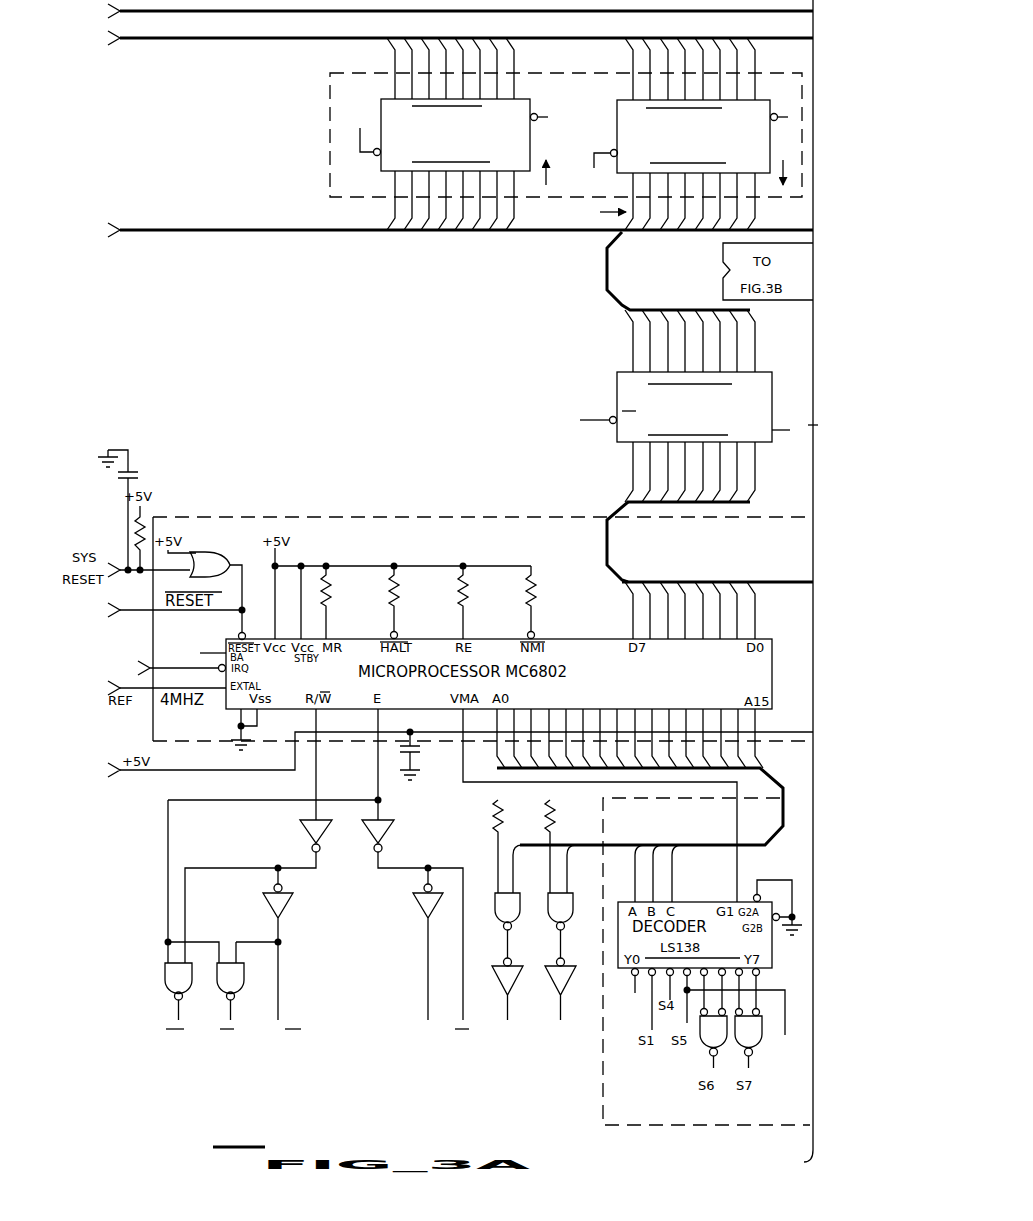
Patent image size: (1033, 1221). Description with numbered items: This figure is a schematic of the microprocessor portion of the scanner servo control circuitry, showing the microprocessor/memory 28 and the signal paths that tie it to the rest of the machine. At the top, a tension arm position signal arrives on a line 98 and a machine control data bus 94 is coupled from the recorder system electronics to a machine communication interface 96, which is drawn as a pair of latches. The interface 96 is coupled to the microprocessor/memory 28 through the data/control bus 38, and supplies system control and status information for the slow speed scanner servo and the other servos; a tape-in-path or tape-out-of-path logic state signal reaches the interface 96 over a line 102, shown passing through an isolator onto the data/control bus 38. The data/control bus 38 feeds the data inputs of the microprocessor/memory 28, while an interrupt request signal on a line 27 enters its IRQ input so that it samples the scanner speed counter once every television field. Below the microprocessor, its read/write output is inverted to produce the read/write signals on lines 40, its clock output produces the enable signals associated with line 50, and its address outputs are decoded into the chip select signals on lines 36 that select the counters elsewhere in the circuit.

The line 98 is at (120, 12).
The machine control data bus 94 is at (120, 40).
The data/control bus 38 is at (131, 233).
The machine communication interface 96 is at (541, 206).
The line 102 is at (612, 297).
The line 27 is at (150, 663).
The microprocessor/memory 28 is at (480, 856).
The read/write line 40 is at (180, 1012).
The line 50 is at (428, 1002).
The chip select line 36 is at (510, 1010).